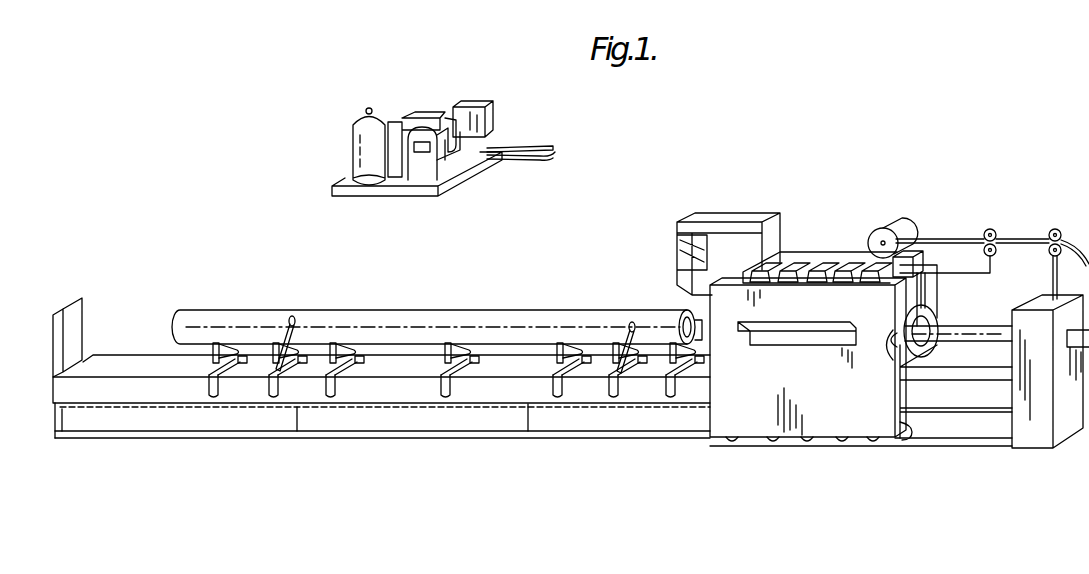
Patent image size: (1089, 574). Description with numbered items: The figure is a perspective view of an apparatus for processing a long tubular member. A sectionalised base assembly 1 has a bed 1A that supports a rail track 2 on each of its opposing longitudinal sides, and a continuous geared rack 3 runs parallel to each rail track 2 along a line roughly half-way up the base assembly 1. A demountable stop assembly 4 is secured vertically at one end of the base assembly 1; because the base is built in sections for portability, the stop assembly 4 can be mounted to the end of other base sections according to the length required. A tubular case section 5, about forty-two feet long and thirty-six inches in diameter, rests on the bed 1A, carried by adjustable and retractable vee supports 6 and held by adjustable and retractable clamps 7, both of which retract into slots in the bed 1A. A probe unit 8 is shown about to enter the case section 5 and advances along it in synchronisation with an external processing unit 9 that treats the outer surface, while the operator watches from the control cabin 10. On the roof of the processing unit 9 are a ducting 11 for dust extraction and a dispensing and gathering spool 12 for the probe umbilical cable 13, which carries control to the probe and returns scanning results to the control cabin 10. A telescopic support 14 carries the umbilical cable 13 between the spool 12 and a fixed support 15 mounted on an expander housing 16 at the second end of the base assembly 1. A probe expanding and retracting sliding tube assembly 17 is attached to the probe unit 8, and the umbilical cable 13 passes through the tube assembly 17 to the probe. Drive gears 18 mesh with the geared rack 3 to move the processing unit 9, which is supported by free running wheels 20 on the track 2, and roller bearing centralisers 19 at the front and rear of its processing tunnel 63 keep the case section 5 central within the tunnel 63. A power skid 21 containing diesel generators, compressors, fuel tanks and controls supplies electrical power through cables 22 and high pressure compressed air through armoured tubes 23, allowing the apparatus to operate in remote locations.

The sectionalised base assembly 1 is at (234, 428).
The bed 1A is at (472, 420).
The rail track 2 is at (182, 434).
The geared rack 3 is at (147, 407).
The demountable stop assembly 4 is at (88, 307).
The tubular case section 5 is at (221, 307).
The vee supports 6 is at (349, 342).
The clamps 7 is at (291, 317).
The probe unit 8 is at (711, 336).
The external processing unit 9 is at (722, 425).
The control cabin 10 is at (710, 220).
The ducting 11 is at (813, 252).
The dispensing and gathering spool 12 is at (907, 213).
The probe umbilical cable 13 is at (970, 212).
The telescopic support 14 is at (992, 228).
The fixed support 15 is at (1057, 227).
The expander housing 16 is at (1033, 437).
The sliding tube assembly 17 is at (990, 342).
The drive gears 18 is at (910, 440).
The roller bearing centralisers 19 is at (891, 335).
The free running wheels 20 is at (738, 440).
The power skid 21 is at (398, 120).
The cables 22 is at (541, 146).
The armoured tubes 23 is at (525, 162).
The processing tunnel 63 is at (932, 317).